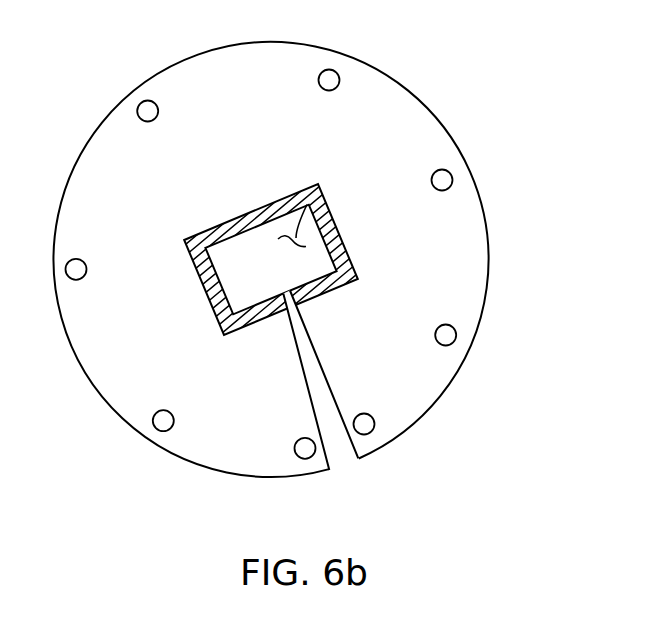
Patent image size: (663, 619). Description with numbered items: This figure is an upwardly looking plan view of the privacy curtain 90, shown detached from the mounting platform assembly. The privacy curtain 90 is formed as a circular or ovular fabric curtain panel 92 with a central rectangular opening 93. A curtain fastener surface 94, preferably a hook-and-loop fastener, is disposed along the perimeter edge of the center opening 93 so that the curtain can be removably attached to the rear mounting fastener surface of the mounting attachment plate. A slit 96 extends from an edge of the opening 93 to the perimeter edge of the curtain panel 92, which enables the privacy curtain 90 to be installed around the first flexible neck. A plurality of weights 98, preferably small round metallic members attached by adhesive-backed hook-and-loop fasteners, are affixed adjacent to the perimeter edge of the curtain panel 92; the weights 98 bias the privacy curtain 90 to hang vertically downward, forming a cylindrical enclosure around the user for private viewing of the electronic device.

The privacy curtain 90 is at (309, 266).
The curtain panel 92 is at (388, 92).
The central rectangular opening 93 is at (318, 185).
The curtain fastener surface 94 is at (341, 233).
The slit 96 is at (308, 395).
The weights 98 is at (146, 100).